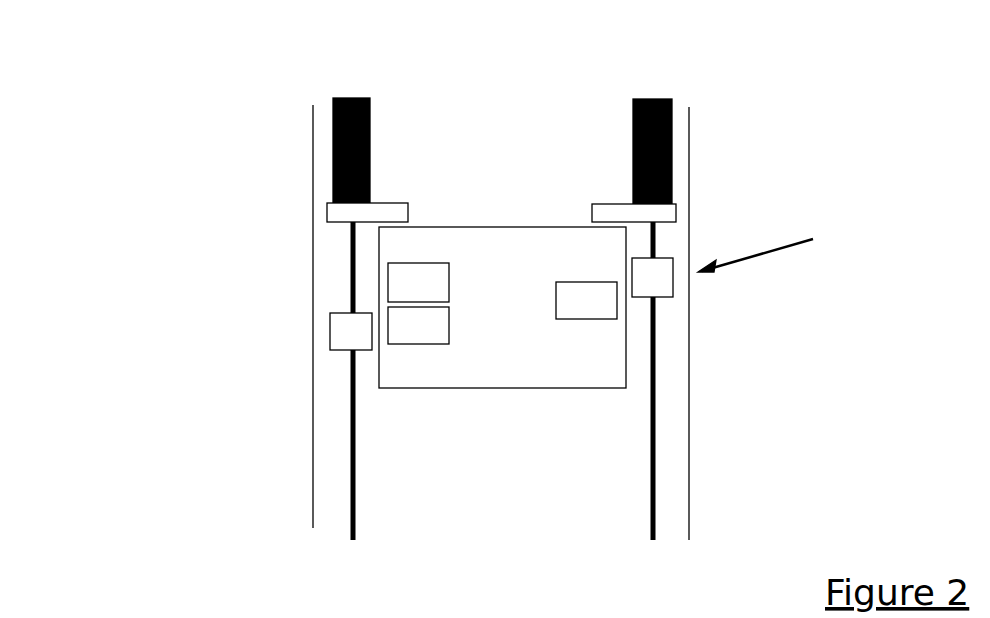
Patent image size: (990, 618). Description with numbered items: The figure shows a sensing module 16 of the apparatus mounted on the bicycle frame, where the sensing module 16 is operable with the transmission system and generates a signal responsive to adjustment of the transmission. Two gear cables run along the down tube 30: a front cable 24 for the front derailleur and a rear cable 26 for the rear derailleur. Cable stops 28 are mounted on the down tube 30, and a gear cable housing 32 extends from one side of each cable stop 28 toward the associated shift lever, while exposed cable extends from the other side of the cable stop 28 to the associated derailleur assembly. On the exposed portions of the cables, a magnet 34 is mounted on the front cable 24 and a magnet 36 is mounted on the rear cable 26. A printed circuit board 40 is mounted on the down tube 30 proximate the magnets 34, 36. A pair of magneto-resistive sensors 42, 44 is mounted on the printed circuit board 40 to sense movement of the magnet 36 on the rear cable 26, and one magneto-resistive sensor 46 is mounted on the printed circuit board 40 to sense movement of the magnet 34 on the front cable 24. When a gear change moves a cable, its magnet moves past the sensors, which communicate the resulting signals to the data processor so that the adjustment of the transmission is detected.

The sensing module 16 is at (776, 244).
The front cable 24 is at (657, 417).
The rear cable 26 is at (348, 398).
The cable stop 28 is at (337, 211).
The down tube 30 is at (675, 440).
The gear cable housing 32 is at (370, 103).
The magnet 34 is at (662, 287).
The magnet 36 is at (337, 330).
The printed circuit board 40 is at (440, 367).
The magneto-resistive sensor 42 is at (426, 272).
The magneto-resistive sensor 44 is at (404, 330).
The magneto-resistive sensor 46 is at (600, 299).